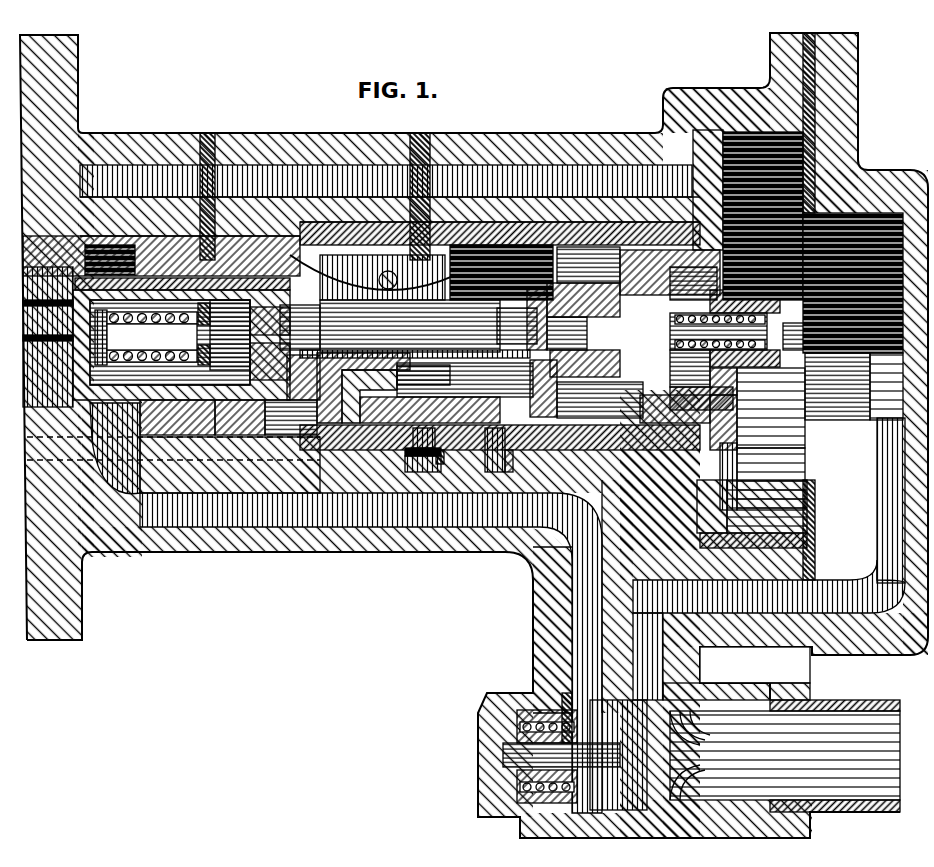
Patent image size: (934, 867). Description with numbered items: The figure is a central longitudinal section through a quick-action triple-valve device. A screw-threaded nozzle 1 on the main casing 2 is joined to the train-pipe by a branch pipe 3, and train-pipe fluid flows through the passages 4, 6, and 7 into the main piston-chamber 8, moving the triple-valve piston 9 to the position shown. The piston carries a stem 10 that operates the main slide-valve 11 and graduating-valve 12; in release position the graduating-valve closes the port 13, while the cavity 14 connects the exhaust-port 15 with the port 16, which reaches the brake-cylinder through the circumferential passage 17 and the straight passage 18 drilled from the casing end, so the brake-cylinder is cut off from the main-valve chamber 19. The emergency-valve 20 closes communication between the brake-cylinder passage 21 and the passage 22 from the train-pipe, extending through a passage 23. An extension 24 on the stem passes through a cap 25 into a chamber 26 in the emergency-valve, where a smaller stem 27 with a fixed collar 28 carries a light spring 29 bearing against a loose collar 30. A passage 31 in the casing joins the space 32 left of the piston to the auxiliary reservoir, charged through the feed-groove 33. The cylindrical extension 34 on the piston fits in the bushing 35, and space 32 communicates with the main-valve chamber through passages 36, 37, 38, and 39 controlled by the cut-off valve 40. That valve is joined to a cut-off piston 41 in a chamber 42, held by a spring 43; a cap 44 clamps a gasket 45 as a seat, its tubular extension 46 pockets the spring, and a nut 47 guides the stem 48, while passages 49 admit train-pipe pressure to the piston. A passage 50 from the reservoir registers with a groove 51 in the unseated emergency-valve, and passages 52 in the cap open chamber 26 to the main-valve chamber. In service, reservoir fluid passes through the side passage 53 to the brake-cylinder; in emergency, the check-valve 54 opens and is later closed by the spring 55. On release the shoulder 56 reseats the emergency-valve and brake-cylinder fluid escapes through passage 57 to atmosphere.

The screw-threaded nozzle 1 is at (805, 690).
The main casing 2 is at (270, 133).
The branch pipe 3 is at (835, 743).
The train-pipe passage 4 is at (690, 758).
The passage 6 is at (769, 630).
The passage 7 is at (880, 482).
The main piston-chamber 8 is at (771, 471).
The triple-valve piston 9 is at (733, 487).
The stem 10 is at (428, 326).
The main slide-valve 11 is at (363, 388).
The graduating-valve 12 is at (465, 380).
The port 13 is at (369, 396).
The cavity 14 is at (430, 411).
The exhaust-port 15 is at (322, 459).
The port 16 is at (423, 437).
The passage 17 is at (423, 465).
The straight passage 18 is at (444, 458).
The main-valve chamber 19 is at (423, 386).
The emergency-valve 20 is at (177, 417).
The brake-cylinder passage 21 is at (48, 337).
The passage 22 is at (135, 258).
The passage 23 is at (240, 417).
The extension 24 is at (230, 339).
The head or cap 25 is at (291, 417).
The chamber 26 is at (152, 364).
The smaller stem 27 is at (152, 325).
The fixed collar 28 is at (116, 337).
The light spring 29 is at (152, 352).
The loose collar 30 is at (197, 334).
The passage 31 is at (438, 196).
The space 32 is at (695, 150).
The feed-groove 33 is at (708, 118).
The cylindrical extension 34 is at (600, 400).
The bushing 35 is at (500, 321).
The passage 36 is at (500, 233).
The passage 37 is at (670, 274).
The passage 38 is at (588, 278).
The passage 39 is at (573, 330).
The cut-off valve 40 is at (567, 333).
The cut-off piston 41 is at (701, 393).
The chamber 42 is at (690, 368).
The spring 43 is at (693, 292).
The cap 44 is at (735, 402).
The gasket 45 is at (665, 412).
The tubular extension 46 is at (771, 408).
The nut 47 is at (800, 338).
The stem 48 is at (718, 331).
The passages 49 is at (745, 339).
The passage 50 is at (216, 212).
The groove 51 is at (180, 285).
The passages 52 is at (262, 360).
The side passage 53 is at (423, 375).
The check-valve 54 is at (612, 730).
The spring 55 is at (552, 760).
The shoulder 56 is at (300, 327).
The passage 57 is at (513, 462).